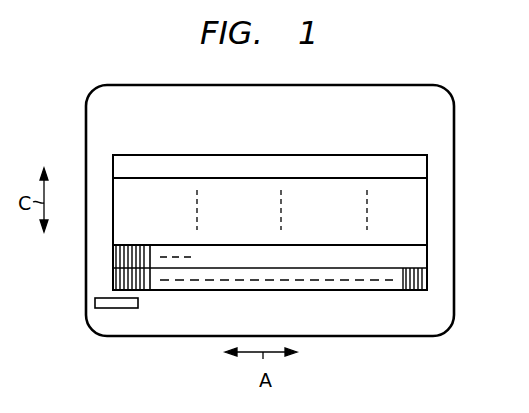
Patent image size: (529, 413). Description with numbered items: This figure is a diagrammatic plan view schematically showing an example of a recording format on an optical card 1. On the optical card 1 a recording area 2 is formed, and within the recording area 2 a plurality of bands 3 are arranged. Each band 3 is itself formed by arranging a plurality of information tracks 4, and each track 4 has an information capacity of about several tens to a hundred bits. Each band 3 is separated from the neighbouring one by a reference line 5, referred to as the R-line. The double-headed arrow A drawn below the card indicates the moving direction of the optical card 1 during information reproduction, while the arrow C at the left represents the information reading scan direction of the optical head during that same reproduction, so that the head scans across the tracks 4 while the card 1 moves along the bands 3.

The optical card 1 is at (454, 308).
The recording area 2 is at (415, 152).
The band 3 is at (427, 167).
The information track 4 is at (150, 278).
The reference line 5 is at (327, 245).